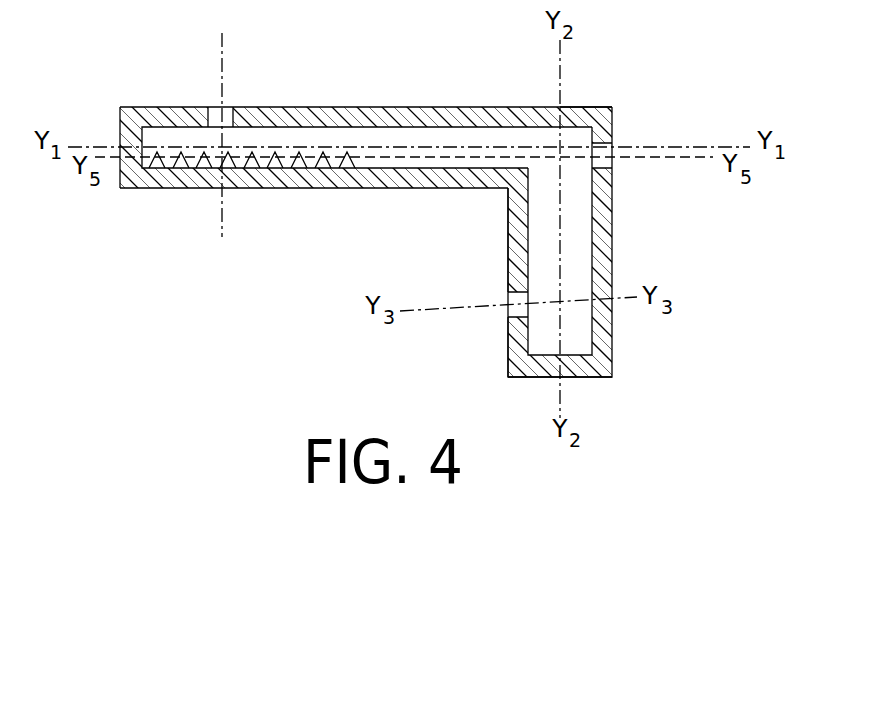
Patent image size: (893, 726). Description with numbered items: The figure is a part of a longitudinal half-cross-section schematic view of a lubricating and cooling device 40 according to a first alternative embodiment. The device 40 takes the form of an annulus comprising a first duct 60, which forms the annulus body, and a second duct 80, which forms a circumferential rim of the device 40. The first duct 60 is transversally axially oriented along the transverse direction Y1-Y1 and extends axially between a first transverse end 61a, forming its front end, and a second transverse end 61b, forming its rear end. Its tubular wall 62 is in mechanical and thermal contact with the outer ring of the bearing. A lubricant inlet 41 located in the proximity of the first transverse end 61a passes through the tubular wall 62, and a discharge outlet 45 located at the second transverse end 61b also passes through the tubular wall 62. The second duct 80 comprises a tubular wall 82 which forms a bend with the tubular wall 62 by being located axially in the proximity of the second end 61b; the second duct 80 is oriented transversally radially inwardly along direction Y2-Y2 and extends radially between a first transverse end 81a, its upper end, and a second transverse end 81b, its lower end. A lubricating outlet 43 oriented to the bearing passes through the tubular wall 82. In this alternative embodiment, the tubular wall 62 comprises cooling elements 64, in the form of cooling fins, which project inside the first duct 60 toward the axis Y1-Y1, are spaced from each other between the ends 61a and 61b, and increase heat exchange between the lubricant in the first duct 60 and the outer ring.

The lubricating and cooling device 40 is at (707, 107).
The lubricant inlet 41 is at (213, 107).
The lubricating outlet 43 is at (508, 298).
The discharge outlet 45 is at (605, 160).
The first duct 60 is at (367, 107).
The first transverse end 61a is at (120, 175).
The second transverse end 61b is at (614, 117).
The tubular wall 62 is at (270, 176).
The cooling element 64 is at (320, 168).
The second duct 80 is at (615, 232).
The first transverse end 81a is at (560, 107).
The second transverse end 81b is at (560, 380).
The tubular wall 82 is at (515, 335).